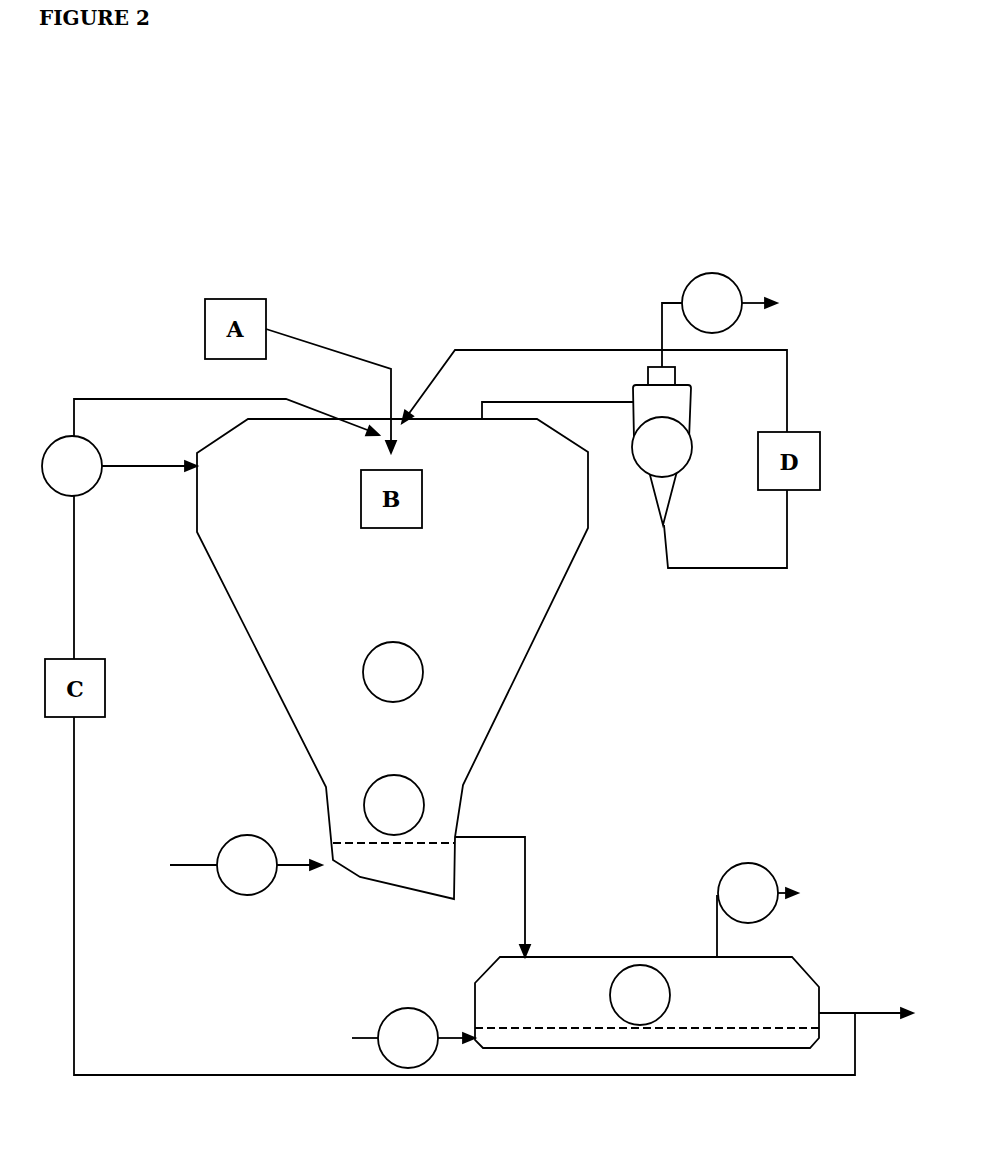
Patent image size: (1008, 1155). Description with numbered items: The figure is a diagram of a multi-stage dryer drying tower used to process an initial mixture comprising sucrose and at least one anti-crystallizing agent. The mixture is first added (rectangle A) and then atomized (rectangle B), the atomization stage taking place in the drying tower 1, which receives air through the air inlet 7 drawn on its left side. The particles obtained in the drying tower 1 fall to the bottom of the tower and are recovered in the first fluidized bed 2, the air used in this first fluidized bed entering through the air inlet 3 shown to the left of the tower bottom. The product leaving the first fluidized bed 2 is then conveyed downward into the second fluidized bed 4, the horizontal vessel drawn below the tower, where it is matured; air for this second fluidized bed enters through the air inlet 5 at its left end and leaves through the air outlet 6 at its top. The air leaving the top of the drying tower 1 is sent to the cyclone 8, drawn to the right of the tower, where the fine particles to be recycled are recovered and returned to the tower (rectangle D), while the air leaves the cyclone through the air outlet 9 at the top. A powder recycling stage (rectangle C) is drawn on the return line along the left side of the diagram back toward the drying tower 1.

The drying tower 1 is at (393, 672).
The first fluidized bed 2 is at (394, 805).
The air inlet of the first fluidized bed 3 is at (246, 865).
The second fluidized bed 4 is at (647, 1002).
The air inlet of the second fluidized bed 5 is at (413, 1038).
The air outlet of the second fluidized bed 6 is at (757, 910).
The air inlet into the drying tower 7 is at (210, 529).
The cyclone 8 is at (587, 446).
The air outlet of the cyclone 9 is at (719, 320).